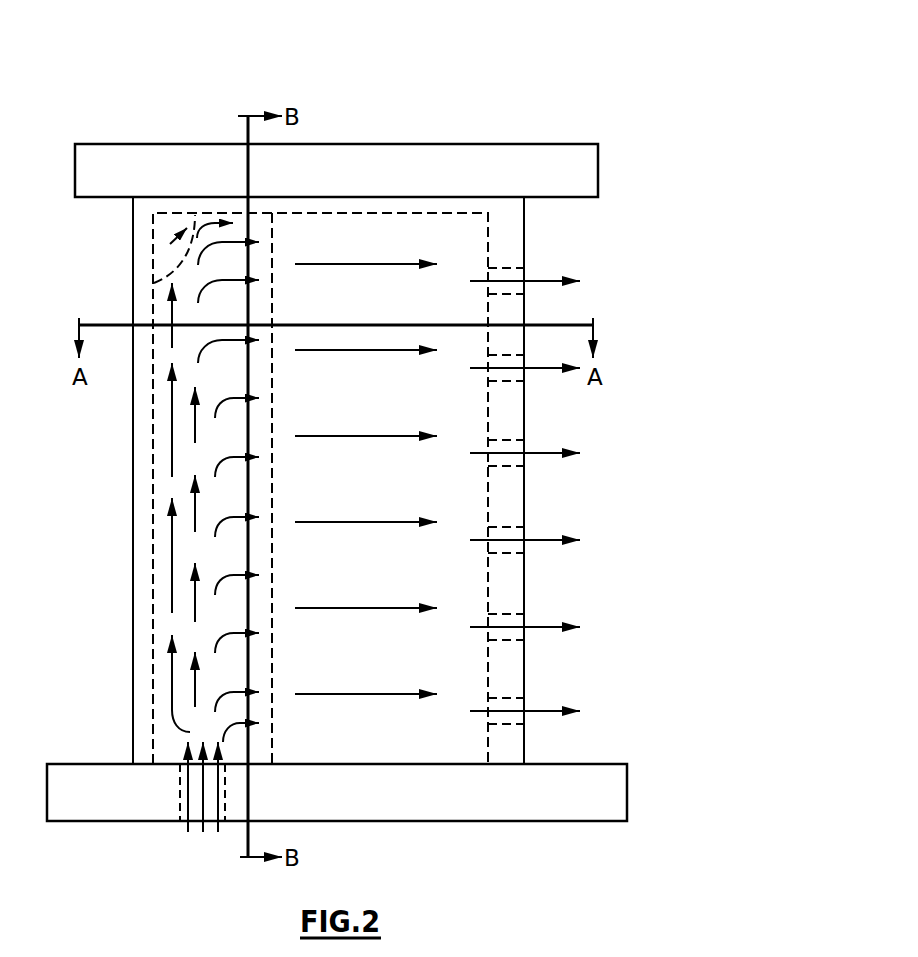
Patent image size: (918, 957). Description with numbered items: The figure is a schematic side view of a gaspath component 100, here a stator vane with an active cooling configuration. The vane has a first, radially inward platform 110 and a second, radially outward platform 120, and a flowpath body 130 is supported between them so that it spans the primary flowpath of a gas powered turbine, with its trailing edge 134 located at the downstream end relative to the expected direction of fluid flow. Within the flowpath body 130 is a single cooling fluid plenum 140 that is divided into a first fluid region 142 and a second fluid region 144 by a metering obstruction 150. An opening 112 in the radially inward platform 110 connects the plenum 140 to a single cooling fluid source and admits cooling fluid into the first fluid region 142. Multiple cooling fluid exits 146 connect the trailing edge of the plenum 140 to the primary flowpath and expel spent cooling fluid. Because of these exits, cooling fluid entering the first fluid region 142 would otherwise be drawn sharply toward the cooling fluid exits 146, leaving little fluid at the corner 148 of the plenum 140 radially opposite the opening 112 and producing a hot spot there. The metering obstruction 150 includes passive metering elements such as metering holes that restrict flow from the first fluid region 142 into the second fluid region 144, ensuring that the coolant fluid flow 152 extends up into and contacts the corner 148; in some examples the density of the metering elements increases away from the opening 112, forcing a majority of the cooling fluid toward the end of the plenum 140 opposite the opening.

The gaspath component 100 is at (690, 98).
The radially inward platform 110 is at (613, 788).
The opening 112 is at (196, 813).
The radially outward platform 120 is at (396, 158).
The flowpath body 130 is at (143, 210).
The trailing edge 134 is at (525, 405).
The cooling fluid plenum 140 is at (230, 212).
The first fluid region 142 is at (170, 622).
The second fluid region 144 is at (427, 750).
The cooling fluid exits 146 is at (506, 269).
The corner 148 is at (178, 253).
The metering obstruction 150 is at (272, 232).
The coolant fluid flow 152 is at (170, 548).